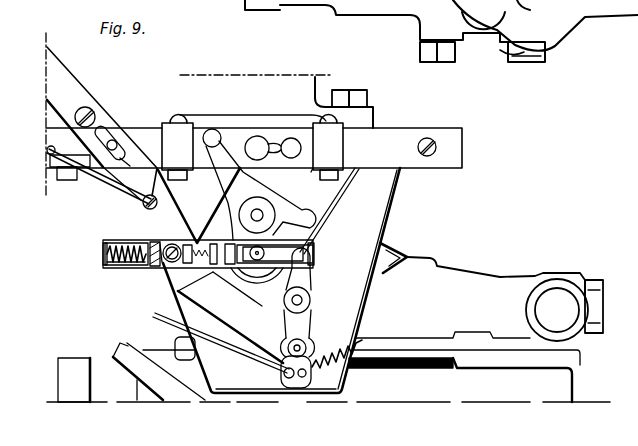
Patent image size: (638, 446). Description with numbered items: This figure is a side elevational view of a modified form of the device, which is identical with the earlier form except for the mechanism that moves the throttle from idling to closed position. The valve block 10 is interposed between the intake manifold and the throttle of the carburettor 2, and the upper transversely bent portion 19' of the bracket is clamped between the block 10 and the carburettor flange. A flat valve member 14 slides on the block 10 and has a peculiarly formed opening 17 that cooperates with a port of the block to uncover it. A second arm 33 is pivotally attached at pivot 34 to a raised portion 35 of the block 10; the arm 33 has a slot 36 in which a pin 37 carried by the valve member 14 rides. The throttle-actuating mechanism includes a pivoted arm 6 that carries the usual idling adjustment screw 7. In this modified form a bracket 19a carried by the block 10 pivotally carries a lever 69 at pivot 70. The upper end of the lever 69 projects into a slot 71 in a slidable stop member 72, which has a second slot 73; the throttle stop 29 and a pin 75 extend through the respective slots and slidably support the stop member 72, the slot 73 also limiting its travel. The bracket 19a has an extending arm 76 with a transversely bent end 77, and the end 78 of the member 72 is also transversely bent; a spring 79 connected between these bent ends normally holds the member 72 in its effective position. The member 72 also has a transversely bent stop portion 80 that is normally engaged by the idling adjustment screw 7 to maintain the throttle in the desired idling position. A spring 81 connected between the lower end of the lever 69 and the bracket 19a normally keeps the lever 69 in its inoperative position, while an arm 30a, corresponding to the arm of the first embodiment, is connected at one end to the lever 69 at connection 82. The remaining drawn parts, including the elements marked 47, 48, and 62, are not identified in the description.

The carburettor 2 is at (553, 383).
The pivoted arm 6 is at (240, 188).
The idling adjustment screw 7 is at (191, 233).
The valve block 10 is at (385, 128).
The valve member 14 is at (420, 128).
The opening 17 is at (291, 138).
The upper transversely bent portion 19' is at (308, 183).
The bracket 19a is at (401, 194).
The throttle stop 29 is at (257, 262).
The arm 30a is at (250, 355).
The second arm 33 is at (72, 72).
The pivot 34 is at (90, 108).
The raised portion 35 is at (100, 115).
The slot 36 is at (112, 178).
The pin 37 is at (122, 161).
The roller 47 is at (262, 138).
The lug 48 is at (266, 370).
The pivot screw 62 is at (142, 204).
The lever 69 is at (313, 318).
The pivot 70 is at (309, 293).
The slot 71 is at (313, 232).
The slidable stop member 72 is at (300, 250).
The second slot 73 is at (163, 243).
The pin 75 is at (165, 265).
The extending arm 76 is at (117, 239).
The transversely bent end 77 is at (105, 261).
The end 78 is at (150, 241).
The spring 79 is at (124, 270).
The transversely-bent stop portion 80 is at (254, 287).
The spring 81 is at (343, 366).
The connection 82 is at (283, 364).